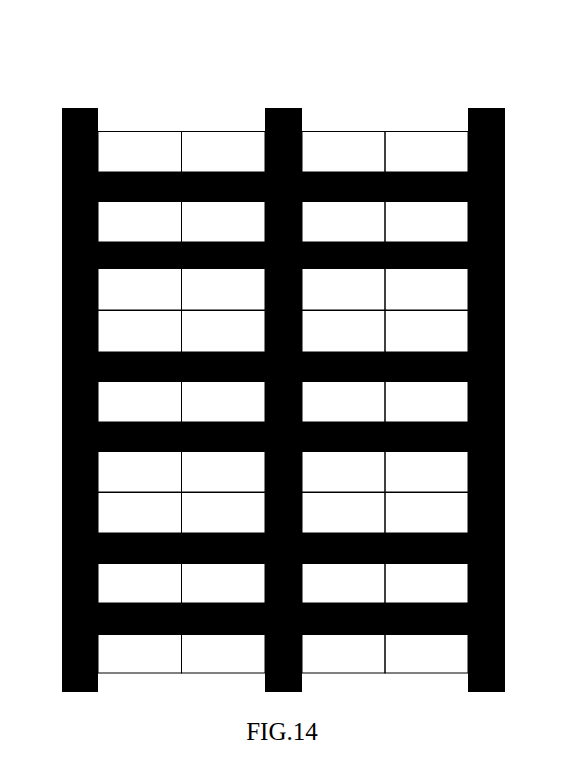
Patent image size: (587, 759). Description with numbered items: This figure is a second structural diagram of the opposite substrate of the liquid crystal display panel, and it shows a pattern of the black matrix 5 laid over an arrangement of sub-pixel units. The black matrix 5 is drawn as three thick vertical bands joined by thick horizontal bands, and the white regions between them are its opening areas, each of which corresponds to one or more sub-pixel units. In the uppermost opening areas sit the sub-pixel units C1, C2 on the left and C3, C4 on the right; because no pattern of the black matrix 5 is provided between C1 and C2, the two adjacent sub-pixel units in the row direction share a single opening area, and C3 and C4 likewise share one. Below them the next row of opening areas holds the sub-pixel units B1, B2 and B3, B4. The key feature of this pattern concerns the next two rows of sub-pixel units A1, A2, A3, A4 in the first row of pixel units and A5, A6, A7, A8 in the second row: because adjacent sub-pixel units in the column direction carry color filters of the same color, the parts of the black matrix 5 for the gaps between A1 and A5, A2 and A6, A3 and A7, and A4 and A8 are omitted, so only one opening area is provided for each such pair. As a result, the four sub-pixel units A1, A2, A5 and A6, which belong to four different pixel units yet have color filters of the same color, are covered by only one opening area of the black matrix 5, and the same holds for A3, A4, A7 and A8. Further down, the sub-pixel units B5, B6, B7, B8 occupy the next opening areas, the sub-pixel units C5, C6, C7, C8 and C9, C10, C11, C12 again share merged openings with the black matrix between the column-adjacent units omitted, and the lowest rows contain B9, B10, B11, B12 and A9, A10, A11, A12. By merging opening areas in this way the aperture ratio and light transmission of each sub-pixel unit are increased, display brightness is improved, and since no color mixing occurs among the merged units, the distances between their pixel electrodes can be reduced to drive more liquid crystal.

The black matrix 5 is at (283, 350).
The sub-pixel unit A1 is at (140, 290).
The sub-pixel unit A2 is at (224, 290).
The sub-pixel unit A3 is at (343, 290).
The sub-pixel unit A4 is at (426, 290).
The sub-pixel unit A5 is at (140, 332).
The sub-pixel unit A6 is at (224, 332).
The sub-pixel unit A7 is at (343, 332).
The sub-pixel unit A8 is at (426, 332).
The sub-pixel unit A9 is at (140, 654).
The sub-pixel unit A10 is at (224, 654).
The sub-pixel unit A11 is at (343, 654).
The sub-pixel unit A12 is at (426, 654).
The sub-pixel unit B1 is at (140, 222).
The sub-pixel unit B2 is at (224, 222).
The sub-pixel unit B3 is at (343, 222).
The sub-pixel unit B4 is at (426, 222).
The sub-pixel unit B5 is at (140, 402).
The sub-pixel unit B6 is at (224, 402).
The sub-pixel unit B7 is at (343, 402).
The sub-pixel unit B8 is at (426, 402).
The sub-pixel unit B9 is at (140, 584).
The sub-pixel unit B10 is at (224, 584).
The sub-pixel unit B11 is at (343, 584).
The sub-pixel unit B12 is at (426, 584).
The sub-pixel unit C1 is at (140, 152).
The sub-pixel unit C2 is at (224, 152).
The sub-pixel unit C3 is at (343, 152).
The sub-pixel unit C4 is at (426, 152).
The sub-pixel unit C5 is at (140, 472).
The sub-pixel unit C6 is at (224, 472).
The sub-pixel unit C7 is at (343, 472).
The sub-pixel unit C8 is at (426, 472).
The sub-pixel unit C9 is at (140, 513).
The sub-pixel unit C10 is at (224, 513).
The sub-pixel unit C11 is at (343, 513).
The sub-pixel unit C12 is at (426, 513).